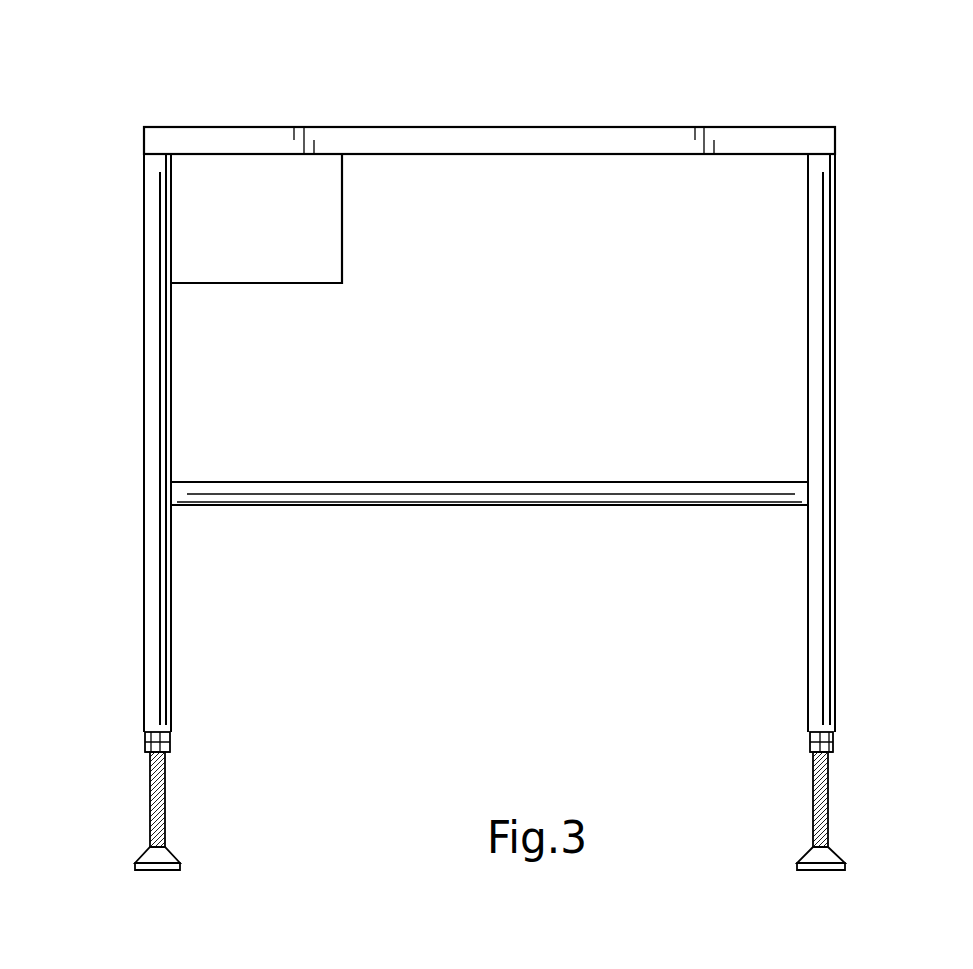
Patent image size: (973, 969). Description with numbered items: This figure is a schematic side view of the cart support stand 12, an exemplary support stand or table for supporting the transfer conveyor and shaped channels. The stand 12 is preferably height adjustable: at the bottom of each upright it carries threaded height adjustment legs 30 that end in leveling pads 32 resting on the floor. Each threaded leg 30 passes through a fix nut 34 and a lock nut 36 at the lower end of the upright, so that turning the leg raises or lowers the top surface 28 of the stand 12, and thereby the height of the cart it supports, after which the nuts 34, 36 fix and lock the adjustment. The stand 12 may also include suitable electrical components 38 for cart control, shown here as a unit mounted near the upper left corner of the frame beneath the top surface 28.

The cart support stand 12 is at (537, 385).
The top surface 28 is at (528, 112).
The electrical components 38 is at (303, 250).
The fix nut 34 is at (172, 738).
The lock nut 36 is at (172, 750).
The threaded height adjustment legs 30 is at (150, 782).
The leveling pads 32 is at (135, 864).